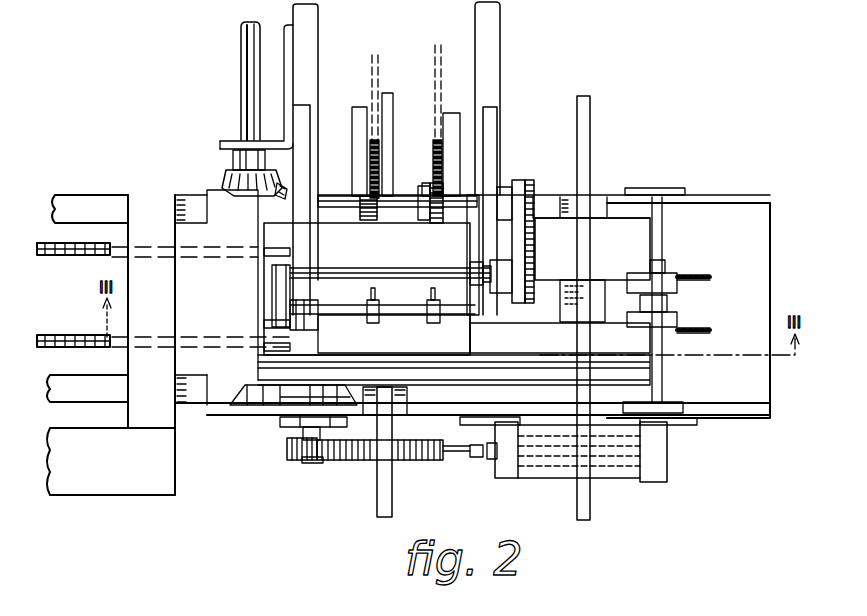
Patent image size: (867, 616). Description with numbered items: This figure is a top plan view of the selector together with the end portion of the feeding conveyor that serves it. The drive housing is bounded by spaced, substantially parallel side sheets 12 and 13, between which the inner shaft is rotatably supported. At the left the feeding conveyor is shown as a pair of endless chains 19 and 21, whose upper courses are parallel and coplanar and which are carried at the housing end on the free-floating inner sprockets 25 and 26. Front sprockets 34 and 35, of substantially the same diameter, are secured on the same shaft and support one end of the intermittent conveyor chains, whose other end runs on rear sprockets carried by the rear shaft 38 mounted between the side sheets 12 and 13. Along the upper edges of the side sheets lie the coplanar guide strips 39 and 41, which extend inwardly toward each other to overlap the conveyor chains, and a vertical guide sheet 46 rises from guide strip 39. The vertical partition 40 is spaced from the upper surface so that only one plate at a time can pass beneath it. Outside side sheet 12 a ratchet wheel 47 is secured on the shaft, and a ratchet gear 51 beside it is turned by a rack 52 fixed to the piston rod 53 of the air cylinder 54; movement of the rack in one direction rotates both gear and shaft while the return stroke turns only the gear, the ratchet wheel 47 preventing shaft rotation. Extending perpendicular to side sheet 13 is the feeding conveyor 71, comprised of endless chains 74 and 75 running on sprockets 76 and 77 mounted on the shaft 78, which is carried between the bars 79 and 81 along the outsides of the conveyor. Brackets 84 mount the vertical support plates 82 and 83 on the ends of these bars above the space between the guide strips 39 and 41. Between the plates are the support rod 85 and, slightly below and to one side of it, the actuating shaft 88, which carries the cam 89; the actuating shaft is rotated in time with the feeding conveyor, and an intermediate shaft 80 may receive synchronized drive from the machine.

The side sheet 12 is at (746, 418).
The side sheet 13 is at (708, 197).
The endless chain 19 is at (74, 334).
The endless chain 21 is at (98, 257).
The inner sprocket 25 is at (258, 349).
The inner sprocket 26 is at (258, 250).
The front sprocket 34 is at (270, 325).
The front sprocket 35 is at (272, 273).
The rear shaft 38 is at (660, 248).
The guide strip 39 is at (394, 329).
The vertical partition 40 is at (472, 350).
The guide strip 41 is at (405, 246).
The vertical guide sheet 46 is at (286, 358).
The ratchet wheel 47 is at (282, 421).
The ratchet gear 51 is at (290, 460).
The rack 52 is at (371, 460).
The piston rod 53 is at (483, 452).
The air cylinder 54 is at (557, 478).
The feeding conveyor 71 is at (460, 62).
The endless chain 74 is at (381, 138).
The endless chain 75 is at (436, 140).
The sprocket 76 is at (368, 222).
The sprocket 77 is at (434, 222).
The shaft 78 is at (335, 195).
The support bar 79 is at (310, 91).
The intermediate shaft 80 is at (245, 64).
The support bar 81 is at (490, 86).
The support plate 82 is at (318, 304).
The support plate 83 is at (474, 302).
The bracket 84 is at (298, 122).
The support rod 85 is at (366, 312).
The actuating shaft 88 is at (402, 277).
The cam 89 is at (490, 294).